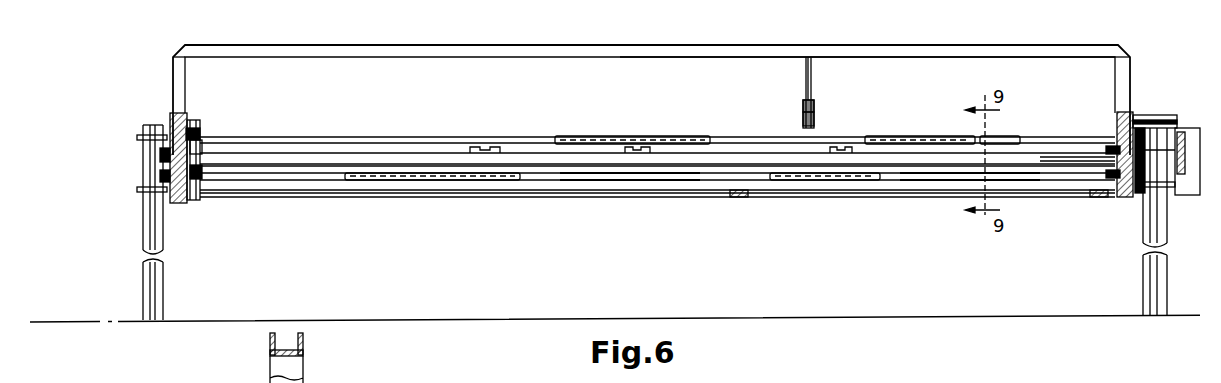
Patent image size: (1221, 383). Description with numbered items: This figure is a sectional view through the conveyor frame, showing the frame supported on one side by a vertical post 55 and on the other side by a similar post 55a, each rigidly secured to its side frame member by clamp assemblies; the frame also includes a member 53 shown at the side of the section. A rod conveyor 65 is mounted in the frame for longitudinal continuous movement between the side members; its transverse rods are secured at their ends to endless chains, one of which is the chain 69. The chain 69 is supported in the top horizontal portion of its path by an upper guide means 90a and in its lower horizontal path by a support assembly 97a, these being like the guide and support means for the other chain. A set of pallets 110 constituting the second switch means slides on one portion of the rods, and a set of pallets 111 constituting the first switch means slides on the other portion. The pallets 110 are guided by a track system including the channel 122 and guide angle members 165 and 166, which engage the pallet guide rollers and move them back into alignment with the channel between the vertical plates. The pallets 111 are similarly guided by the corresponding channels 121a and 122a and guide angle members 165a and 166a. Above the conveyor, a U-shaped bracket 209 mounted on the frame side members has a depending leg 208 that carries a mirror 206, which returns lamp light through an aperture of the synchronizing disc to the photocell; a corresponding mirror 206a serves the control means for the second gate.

The endless chain 69 is at (197, 128).
The upper guide means 90a is at (204, 143).
The support assembly 97a is at (204, 181).
The vertical post 55a is at (163, 293).
The vertical post 55 is at (1143, 278).
The channel 122a is at (485, 147).
The channel 121a is at (640, 148).
The channel 122 is at (840, 146).
The pallet 111 is at (690, 120).
The rod conveyor 65 is at (944, 133).
The pallet 110 is at (1006, 136).
The side rail 53 is at (1060, 156).
The guide angle member 166a is at (601, 177).
The guide angle member 165a is at (660, 181).
The guide angle member 166 is at (964, 174).
The guide angle member 165 is at (1012, 180).
The mirror 206a is at (802, 112).
The mirror 206 is at (814, 112).
The depending leg 208 is at (814, 82).
The U-shaped bracket 209 is at (718, 58).